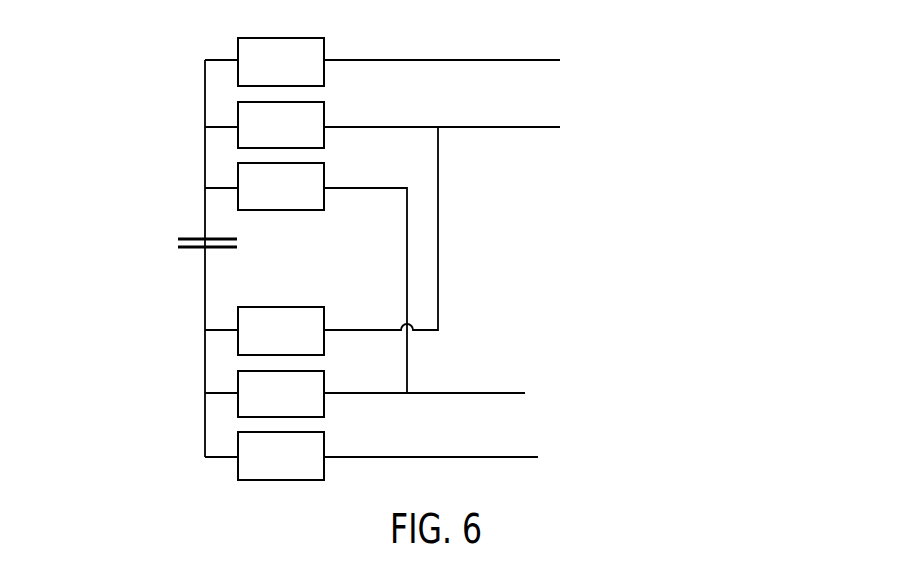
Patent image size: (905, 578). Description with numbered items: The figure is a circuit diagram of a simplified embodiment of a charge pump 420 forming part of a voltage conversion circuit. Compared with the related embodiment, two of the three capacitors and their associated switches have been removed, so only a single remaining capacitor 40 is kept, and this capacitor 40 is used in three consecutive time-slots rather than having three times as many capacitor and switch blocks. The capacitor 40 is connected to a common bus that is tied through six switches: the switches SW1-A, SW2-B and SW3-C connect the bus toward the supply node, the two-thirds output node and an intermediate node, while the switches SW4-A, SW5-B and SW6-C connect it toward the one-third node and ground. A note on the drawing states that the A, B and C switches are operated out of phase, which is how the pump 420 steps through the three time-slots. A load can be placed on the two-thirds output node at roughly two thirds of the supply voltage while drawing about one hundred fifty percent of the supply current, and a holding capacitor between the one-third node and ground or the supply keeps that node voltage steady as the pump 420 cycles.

The capacitor 40 is at (222, 249).
The charge pump 420 is at (110, 268).
The switch SW1-A is at (281, 62).
The switch SW2-B is at (281, 125).
The switch SW3-C is at (281, 186).
The switch SW4-A is at (281, 331).
The switch SW5-B is at (281, 394).
The switch SW6-C is at (281, 456).